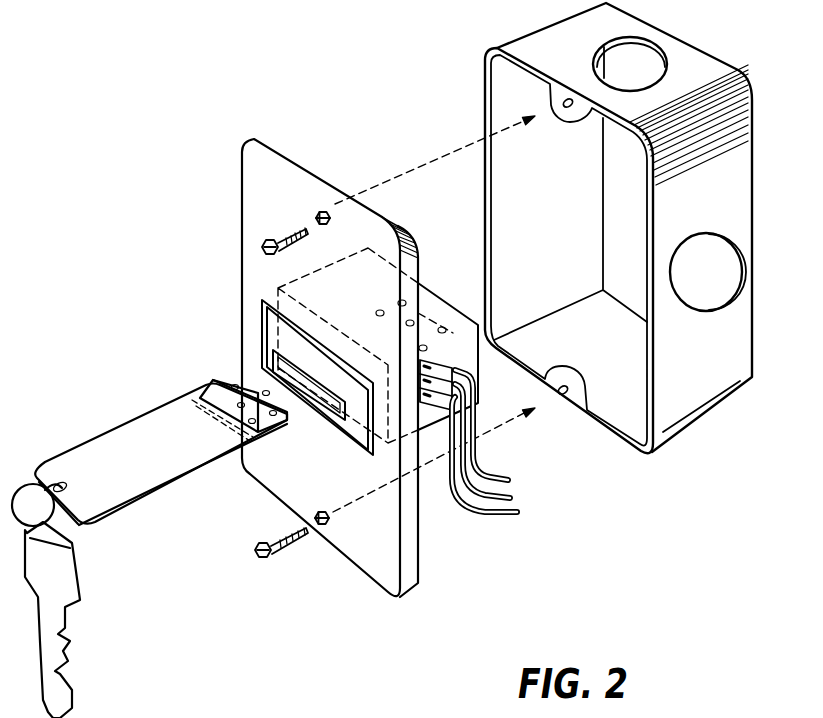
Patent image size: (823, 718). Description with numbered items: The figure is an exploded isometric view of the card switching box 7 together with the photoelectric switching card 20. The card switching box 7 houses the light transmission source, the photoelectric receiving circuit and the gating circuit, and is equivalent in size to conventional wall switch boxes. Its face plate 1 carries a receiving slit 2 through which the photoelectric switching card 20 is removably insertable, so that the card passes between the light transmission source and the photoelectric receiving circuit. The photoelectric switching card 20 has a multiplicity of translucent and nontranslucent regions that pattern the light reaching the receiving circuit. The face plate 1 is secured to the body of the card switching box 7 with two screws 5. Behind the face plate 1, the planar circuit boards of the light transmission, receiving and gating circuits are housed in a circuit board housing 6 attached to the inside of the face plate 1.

The face plate 1 is at (240, 160).
The receiving slit 2 is at (265, 345).
The screws 5 is at (283, 237).
The circuit board housing 6 is at (475, 381).
The card switching box 7 is at (707, 382).
The photoelectric switching card 20 is at (88, 455).